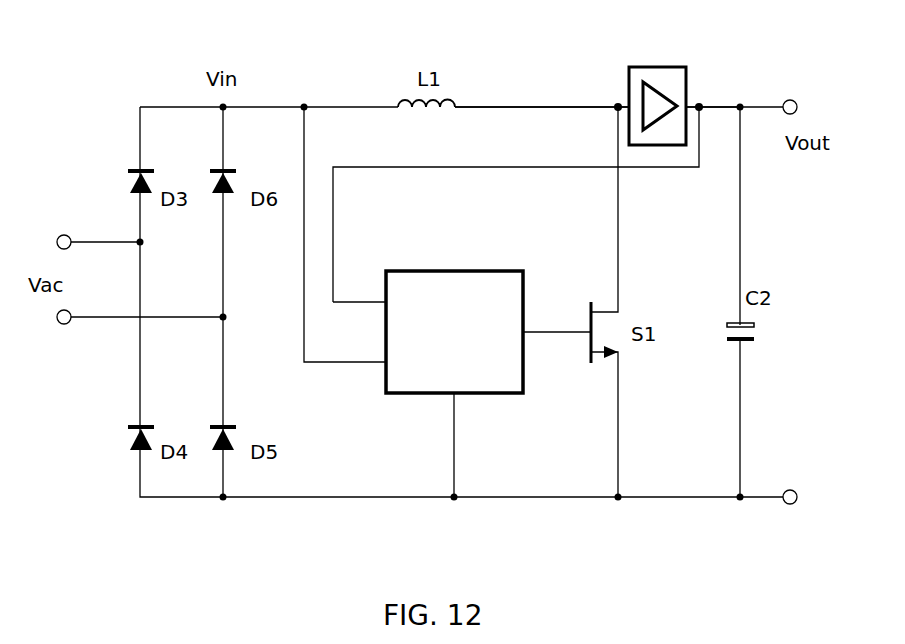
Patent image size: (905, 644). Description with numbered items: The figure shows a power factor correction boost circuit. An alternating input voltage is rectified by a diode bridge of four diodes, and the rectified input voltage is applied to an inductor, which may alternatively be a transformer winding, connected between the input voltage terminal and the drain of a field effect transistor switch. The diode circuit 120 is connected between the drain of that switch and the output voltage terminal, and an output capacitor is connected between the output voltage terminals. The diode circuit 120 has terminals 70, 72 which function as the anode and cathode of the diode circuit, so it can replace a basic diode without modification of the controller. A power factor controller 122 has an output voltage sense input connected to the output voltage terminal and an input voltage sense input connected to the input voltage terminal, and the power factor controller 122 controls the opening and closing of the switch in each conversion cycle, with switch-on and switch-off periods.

The diode circuit 120 is at (628, 77).
The terminal 70 is at (617, 108).
The terminal 72 is at (700, 110).
The power factor controller 122 is at (418, 271).